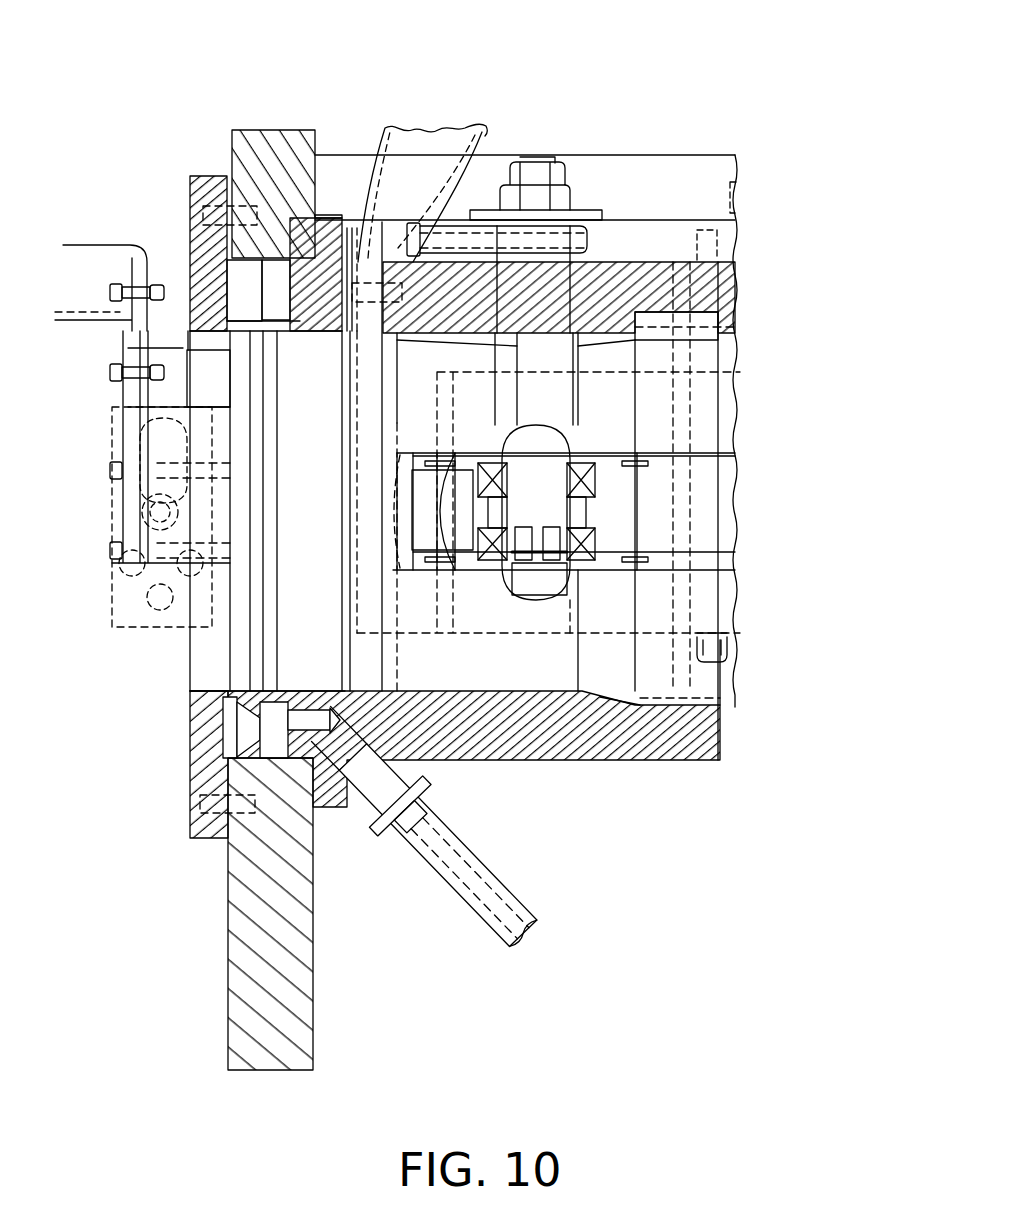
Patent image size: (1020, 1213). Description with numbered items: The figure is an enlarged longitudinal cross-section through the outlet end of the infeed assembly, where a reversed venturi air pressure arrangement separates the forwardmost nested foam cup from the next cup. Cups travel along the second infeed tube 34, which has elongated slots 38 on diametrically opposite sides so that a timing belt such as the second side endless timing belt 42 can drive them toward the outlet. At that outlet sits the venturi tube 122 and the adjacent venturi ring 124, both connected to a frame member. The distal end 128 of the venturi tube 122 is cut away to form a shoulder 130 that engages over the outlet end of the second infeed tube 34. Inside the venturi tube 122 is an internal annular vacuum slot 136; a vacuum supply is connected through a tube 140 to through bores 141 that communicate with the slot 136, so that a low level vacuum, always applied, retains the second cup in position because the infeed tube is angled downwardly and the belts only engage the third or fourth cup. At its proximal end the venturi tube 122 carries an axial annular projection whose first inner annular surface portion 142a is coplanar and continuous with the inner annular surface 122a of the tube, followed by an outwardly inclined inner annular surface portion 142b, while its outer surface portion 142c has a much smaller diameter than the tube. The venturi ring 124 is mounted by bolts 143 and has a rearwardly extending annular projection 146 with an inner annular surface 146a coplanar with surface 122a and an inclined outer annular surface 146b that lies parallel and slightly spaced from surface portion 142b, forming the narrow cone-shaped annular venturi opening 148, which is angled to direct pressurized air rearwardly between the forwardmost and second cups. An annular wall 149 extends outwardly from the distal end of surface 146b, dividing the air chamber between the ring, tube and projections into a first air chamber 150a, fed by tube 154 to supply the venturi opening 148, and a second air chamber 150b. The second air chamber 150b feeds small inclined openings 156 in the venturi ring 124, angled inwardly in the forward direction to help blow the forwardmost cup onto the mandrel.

The second infeed tube 34 is at (705, 318).
The elongated slots 38 is at (700, 450).
The second side endless timing belt 42 is at (712, 507).
The venturi tube 122 is at (645, 290).
The inner annular surface 122a is at (303, 690).
The venturi ring 124 is at (200, 843).
The distal end 128 is at (723, 740).
The shoulder 130 is at (637, 707).
The internal annular vacuum slot 136 is at (373, 692).
The tube 140 is at (434, 137).
The through bores 141 is at (403, 283).
The first inner annular surface portion 142a is at (277, 331).
The outwardly inclined inner annular surface portion 142b is at (265, 331).
The outer surface portion 142c is at (283, 261).
The bolts 143 is at (214, 204).
The annular projection 146 is at (238, 347).
The inner annular surface 146a is at (245, 691).
The inclined outer annular surface 146b is at (240, 705).
The narrow annular venturi opening 148 is at (263, 693).
The annular wall 149 is at (271, 255).
The first air chamber 150a is at (291, 262).
The second air chamber 150b is at (238, 283).
The tube 154 is at (507, 880).
The small inclined openings 156 is at (210, 322).